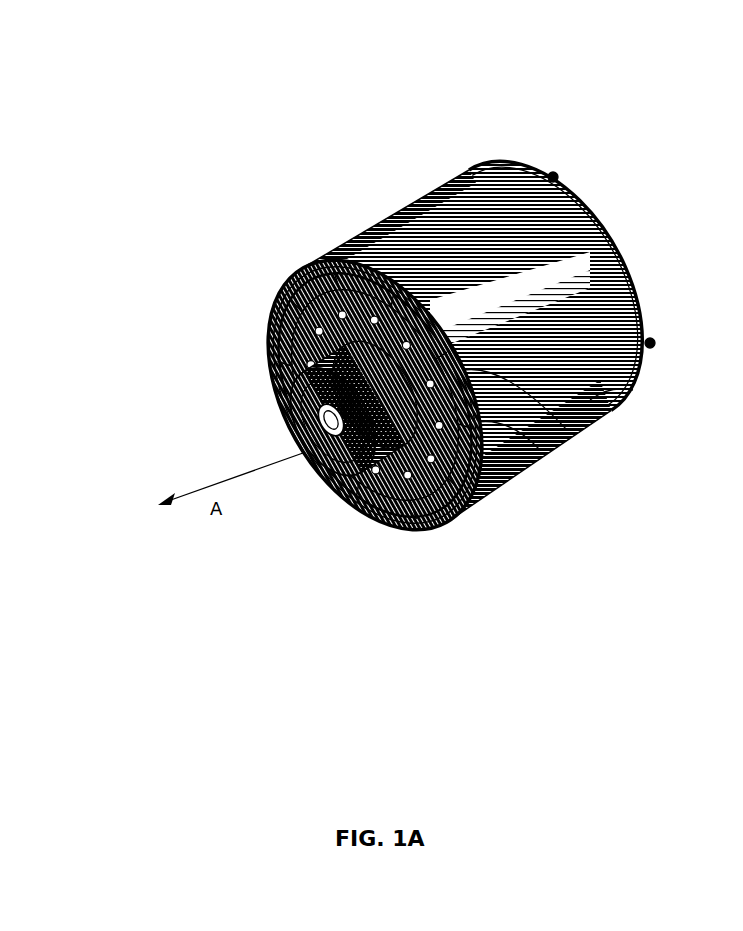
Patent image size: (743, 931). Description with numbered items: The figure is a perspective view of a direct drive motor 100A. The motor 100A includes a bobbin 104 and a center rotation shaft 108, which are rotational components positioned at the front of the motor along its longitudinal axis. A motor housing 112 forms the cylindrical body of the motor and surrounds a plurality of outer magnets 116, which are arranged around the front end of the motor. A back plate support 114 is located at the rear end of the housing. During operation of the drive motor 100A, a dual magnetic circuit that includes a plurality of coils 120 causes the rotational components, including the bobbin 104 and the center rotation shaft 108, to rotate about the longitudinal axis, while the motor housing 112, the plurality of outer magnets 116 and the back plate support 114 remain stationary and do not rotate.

The direct drive motor 100A is at (441, 337).
The bobbin 104 is at (337, 485).
The center rotation shaft 108 is at (300, 437).
The motor housing 112 is at (640, 393).
The back plate support 114 is at (618, 242).
The outer magnets 116 is at (325, 257).
The coils 120 is at (540, 473).